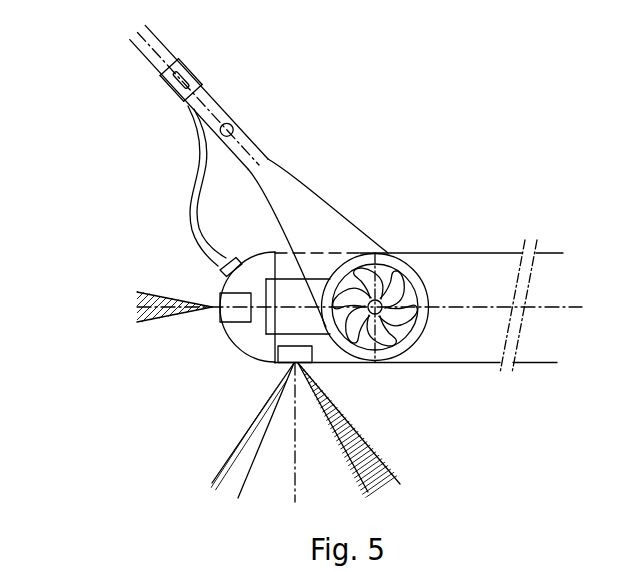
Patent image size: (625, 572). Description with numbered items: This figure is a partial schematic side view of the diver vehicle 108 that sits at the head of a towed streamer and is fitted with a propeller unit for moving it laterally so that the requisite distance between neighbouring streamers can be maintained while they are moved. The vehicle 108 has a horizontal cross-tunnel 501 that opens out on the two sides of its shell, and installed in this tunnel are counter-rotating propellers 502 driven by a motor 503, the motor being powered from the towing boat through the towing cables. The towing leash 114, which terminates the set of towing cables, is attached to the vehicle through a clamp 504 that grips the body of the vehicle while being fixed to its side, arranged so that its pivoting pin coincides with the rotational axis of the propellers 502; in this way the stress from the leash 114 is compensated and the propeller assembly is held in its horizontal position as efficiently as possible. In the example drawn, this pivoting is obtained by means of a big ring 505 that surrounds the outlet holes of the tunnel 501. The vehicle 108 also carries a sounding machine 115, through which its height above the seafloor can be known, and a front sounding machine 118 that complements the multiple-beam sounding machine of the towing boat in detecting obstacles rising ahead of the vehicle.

The diver vehicle 108 is at (465, 347).
The leash 114 is at (157, 52).
The sounding machine 115 is at (303, 367).
The front sounding machine 118 is at (228, 315).
The horizontal cross-tunnel 501 is at (385, 264).
The counter-rotating propellers 502 is at (398, 282).
The motor 503 is at (277, 327).
The clamp 504 is at (253, 150).
The big ring 505 is at (387, 363).